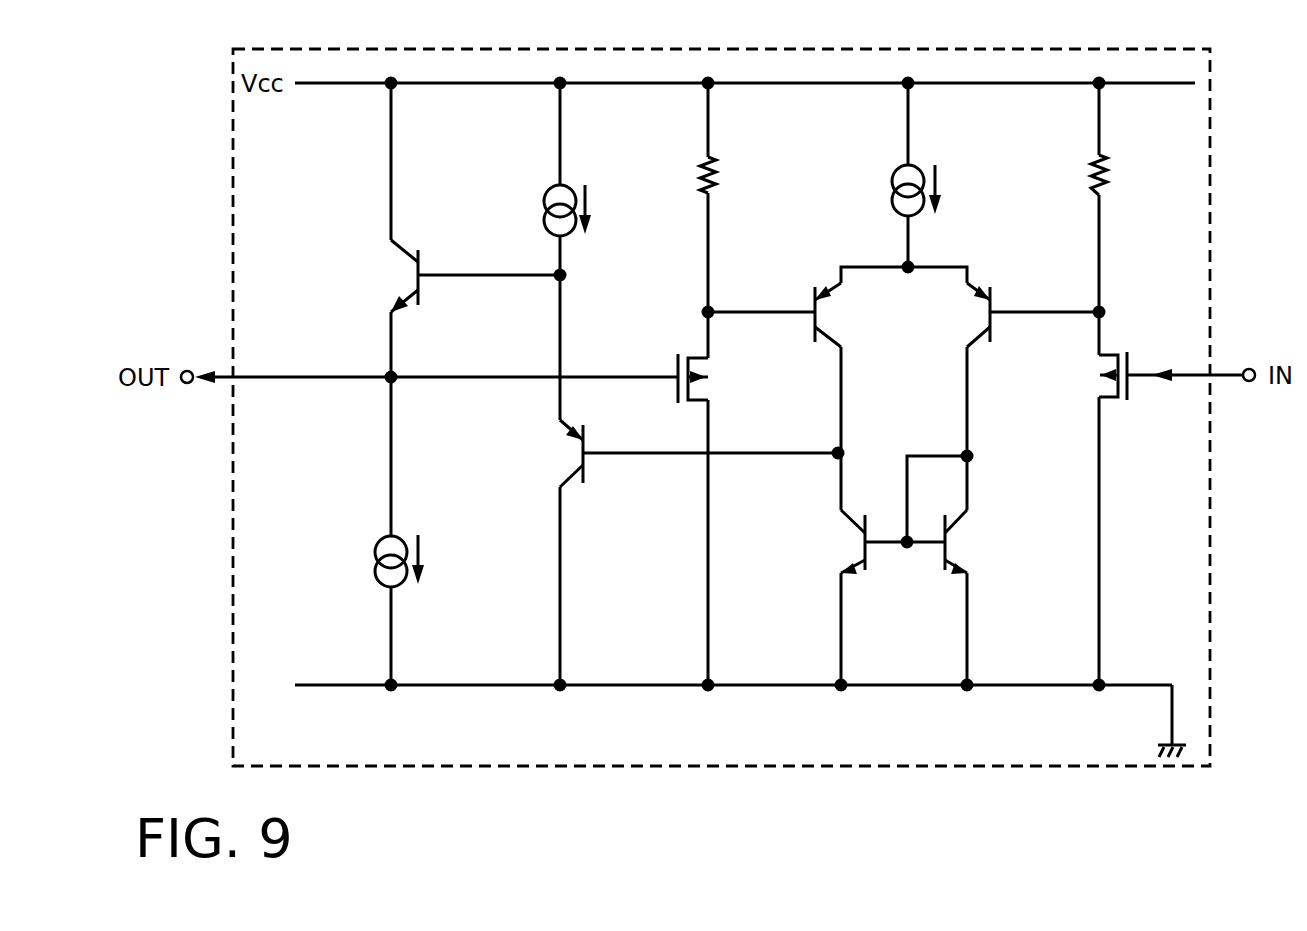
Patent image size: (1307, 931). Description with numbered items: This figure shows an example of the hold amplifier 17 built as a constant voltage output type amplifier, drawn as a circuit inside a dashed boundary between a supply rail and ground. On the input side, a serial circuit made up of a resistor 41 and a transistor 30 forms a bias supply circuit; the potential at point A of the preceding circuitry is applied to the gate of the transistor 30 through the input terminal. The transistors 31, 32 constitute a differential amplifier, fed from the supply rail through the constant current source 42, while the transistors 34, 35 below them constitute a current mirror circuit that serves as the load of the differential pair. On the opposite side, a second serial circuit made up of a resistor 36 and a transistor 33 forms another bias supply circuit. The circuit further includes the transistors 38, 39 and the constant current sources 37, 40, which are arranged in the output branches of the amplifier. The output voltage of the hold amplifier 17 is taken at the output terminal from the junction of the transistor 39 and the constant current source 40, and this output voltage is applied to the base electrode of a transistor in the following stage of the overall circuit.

The hold amplifier 17 is at (722, 49).
The transistor 30 is at (1135, 366).
The transistor 31 is at (980, 321).
The transistor 32 is at (826, 320).
The transistor 33 is at (715, 378).
The transistor 34 is at (965, 548).
The transistor 35 is at (850, 546).
The resistor 36 is at (693, 180).
The constant current source 37 is at (545, 204).
The transistor 38 is at (568, 458).
The transistor 39 is at (398, 271).
The constant current source 40 is at (375, 557).
The resistor 41 is at (1110, 181).
The constant current source 42 is at (893, 185).